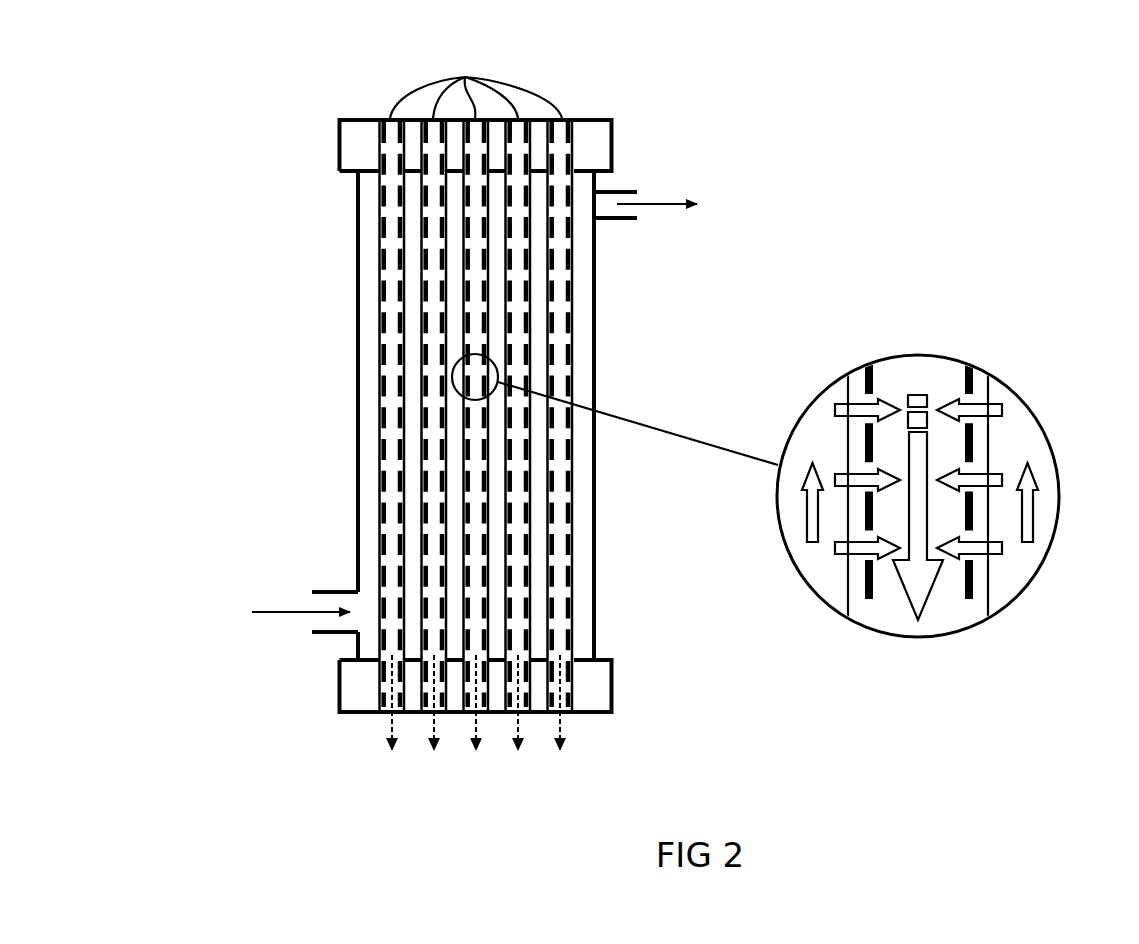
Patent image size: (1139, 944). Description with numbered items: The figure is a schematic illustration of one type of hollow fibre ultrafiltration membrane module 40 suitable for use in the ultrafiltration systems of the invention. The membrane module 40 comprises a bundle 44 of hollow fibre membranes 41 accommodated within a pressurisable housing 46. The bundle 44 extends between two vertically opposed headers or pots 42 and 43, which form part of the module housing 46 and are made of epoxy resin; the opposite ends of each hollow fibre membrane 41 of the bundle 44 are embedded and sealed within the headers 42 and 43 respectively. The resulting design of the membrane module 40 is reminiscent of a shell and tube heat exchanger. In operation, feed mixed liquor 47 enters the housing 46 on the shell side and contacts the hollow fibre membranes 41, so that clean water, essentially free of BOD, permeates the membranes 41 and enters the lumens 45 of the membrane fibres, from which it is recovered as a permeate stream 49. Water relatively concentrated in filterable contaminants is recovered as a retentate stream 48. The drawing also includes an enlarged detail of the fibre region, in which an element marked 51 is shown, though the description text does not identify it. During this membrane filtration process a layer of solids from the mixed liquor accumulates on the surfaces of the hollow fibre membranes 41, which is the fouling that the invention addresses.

The hollow fibre ultrafiltration membrane module 40 is at (605, 595).
The hollow fibre membranes 41 is at (378, 413).
The header 42 is at (357, 146).
The header 43 is at (613, 688).
The bundle 44 is at (476, 84).
The lumens 45 is at (392, 293).
The pressurisable housing 46 is at (600, 542).
The feed mixed liquor 47 is at (1093, 552).
The retentate stream 48 is at (669, 205).
The permeate stream 49 is at (1055, 632).
The annular flow channel 51 is at (887, 602).